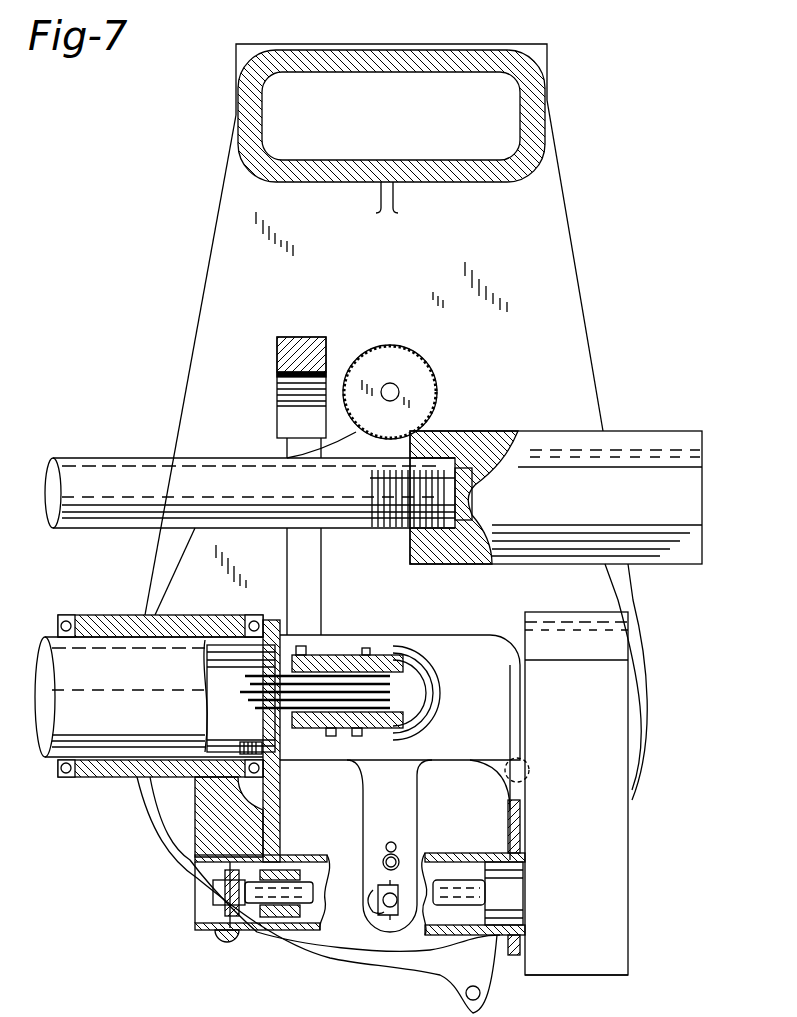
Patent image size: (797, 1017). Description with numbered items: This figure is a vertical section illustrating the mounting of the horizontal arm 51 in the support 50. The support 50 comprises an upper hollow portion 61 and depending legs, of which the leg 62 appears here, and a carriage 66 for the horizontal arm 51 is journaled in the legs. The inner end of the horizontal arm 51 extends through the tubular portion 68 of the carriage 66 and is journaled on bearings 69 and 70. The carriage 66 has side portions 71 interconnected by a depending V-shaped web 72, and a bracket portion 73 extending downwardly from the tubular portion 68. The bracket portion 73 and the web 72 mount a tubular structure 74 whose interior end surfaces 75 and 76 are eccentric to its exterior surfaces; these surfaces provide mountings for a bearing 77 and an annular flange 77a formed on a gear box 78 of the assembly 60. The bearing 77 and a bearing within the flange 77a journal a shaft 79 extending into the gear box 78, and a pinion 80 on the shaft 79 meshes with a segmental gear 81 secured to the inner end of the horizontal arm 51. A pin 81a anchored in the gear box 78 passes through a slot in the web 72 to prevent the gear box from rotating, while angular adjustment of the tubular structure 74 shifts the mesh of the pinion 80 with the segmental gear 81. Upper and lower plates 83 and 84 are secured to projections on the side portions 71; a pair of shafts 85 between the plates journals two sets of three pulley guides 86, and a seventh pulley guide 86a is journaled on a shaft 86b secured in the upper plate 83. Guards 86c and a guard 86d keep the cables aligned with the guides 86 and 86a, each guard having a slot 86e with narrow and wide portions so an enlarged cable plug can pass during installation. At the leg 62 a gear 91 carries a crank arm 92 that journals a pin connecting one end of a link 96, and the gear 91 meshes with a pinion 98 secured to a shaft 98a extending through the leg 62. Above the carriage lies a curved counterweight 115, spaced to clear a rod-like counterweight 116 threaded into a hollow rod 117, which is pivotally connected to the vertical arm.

The support 50 is at (576, 160).
The horizontal arm 51 is at (50, 648).
The assembly 60 is at (636, 904).
The upper hollow portion 61 is at (428, 58).
The leg 62 is at (570, 265).
The carriage 66 is at (119, 790).
The tubular portion 68 is at (75, 778).
The bearing 69 is at (242, 745).
The bearing 70 is at (58, 766).
The side portions 71 is at (469, 785).
The V-shaped web 72 is at (510, 815).
The bracket portion 73 is at (195, 830).
The tubular structure 74 is at (310, 858).
The interior surface 75 is at (200, 915).
The interior surface 76 is at (522, 864).
The bearing 77 is at (240, 930).
The annular flange 77a is at (512, 890).
The gear box 78 is at (570, 975).
The shaft 79 is at (310, 915).
The pinion 80 is at (290, 933).
The segmental gear 81 is at (276, 820).
The pin 81a is at (525, 760).
The upper plate 83 is at (313, 654).
The lower plate 84 is at (334, 730).
The shafts 85 is at (357, 730).
The pulley guides 86 is at (316, 728).
The pulley guide 86a is at (320, 655).
The shaft 86b is at (366, 650).
The guards 86c is at (407, 716).
The guard 86d is at (405, 672).
The slot 86e is at (405, 692).
The gear 91 is at (160, 585).
The crank arm 92 is at (362, 788).
The link 96 is at (373, 893).
The pinion 98 is at (418, 362).
The shaft 98a is at (400, 392).
The counterweight 115 is at (297, 337).
The counterweight 116 is at (613, 445).
The rod 117 is at (128, 472).